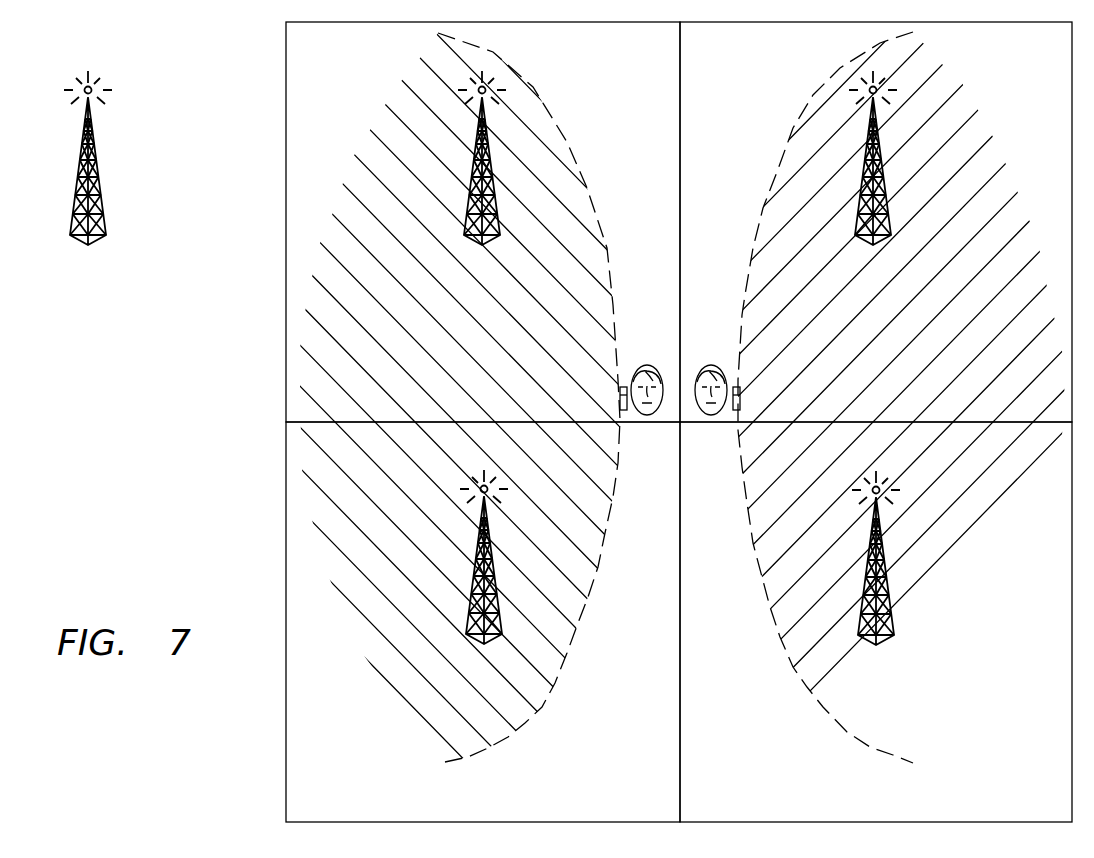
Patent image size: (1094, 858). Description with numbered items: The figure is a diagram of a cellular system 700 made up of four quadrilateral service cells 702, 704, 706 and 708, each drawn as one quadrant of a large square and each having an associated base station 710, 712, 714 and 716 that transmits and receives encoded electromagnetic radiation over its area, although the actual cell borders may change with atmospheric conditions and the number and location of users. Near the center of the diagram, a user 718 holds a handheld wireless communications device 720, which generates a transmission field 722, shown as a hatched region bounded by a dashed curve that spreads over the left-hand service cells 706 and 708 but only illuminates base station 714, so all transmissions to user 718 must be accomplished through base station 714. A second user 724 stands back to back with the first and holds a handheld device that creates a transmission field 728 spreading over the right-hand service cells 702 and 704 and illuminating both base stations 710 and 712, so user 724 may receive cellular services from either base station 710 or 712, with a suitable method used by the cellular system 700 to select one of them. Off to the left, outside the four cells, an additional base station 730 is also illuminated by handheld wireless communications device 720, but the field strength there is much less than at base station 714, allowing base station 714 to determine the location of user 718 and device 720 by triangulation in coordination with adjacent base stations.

The cellular system 700 is at (98, 533).
The service cell 702 is at (754, 805).
The service cell 704 is at (751, 66).
The service cell 706 is at (652, 67).
The service cell 708 is at (652, 805).
The base station 710 is at (885, 641).
The base station 712 is at (883, 245).
The base station 714 is at (474, 242).
The base station 716 is at (479, 641).
The user 718 is at (650, 364).
The handheld wireless communications device 720 is at (621, 398).
The transmission field 722 is at (563, 142).
The user 724 is at (710, 364).
The transmission field 728 is at (780, 617).
The base station 730 is at (80, 243).